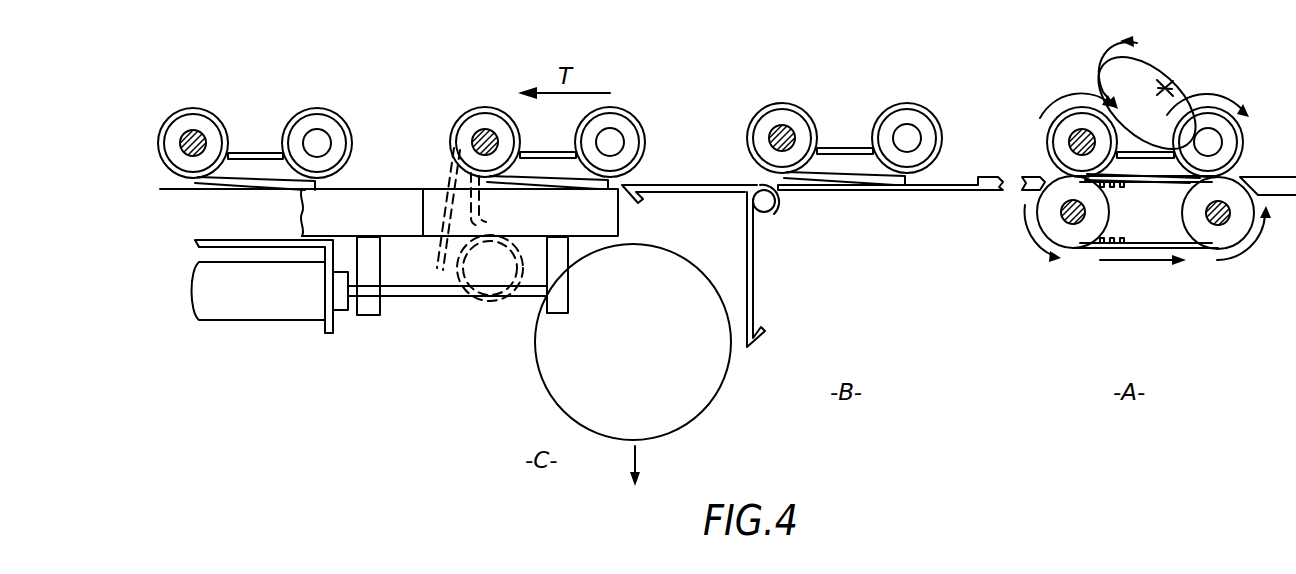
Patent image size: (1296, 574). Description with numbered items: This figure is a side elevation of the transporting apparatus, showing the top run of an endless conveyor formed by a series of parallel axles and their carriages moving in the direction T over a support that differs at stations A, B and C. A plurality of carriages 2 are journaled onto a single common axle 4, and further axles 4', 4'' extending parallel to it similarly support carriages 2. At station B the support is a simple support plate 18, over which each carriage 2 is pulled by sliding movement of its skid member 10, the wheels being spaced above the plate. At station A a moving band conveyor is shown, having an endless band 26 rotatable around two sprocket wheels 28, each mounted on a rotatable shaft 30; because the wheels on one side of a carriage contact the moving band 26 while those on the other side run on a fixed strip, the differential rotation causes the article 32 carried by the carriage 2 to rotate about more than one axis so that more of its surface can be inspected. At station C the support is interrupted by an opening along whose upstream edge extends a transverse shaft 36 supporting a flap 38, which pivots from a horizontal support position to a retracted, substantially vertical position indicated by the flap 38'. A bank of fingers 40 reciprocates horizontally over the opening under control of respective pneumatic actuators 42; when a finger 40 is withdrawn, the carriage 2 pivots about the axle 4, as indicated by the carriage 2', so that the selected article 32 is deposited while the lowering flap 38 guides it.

The carriage 2 is at (255, 131).
The pivoted carriage 2' is at (465, 249).
The common axle 4 is at (547, 123).
The further axle 4' is at (844, 152).
The further axle 4'' is at (1133, 120).
The skid member 10 is at (851, 184).
The support plate 18 is at (942, 191).
The endless band 26 is at (1194, 252).
The sprocket wheel 28 is at (1125, 251).
The rotatable shaft 30 is at (1077, 224).
The article 32 is at (650, 355).
The transverse shaft 36 is at (763, 210).
The flap 38 is at (700, 174).
The retracted flap 38' is at (794, 269).
The finger 40 is at (556, 225).
The pneumatic actuator 42 is at (266, 308).